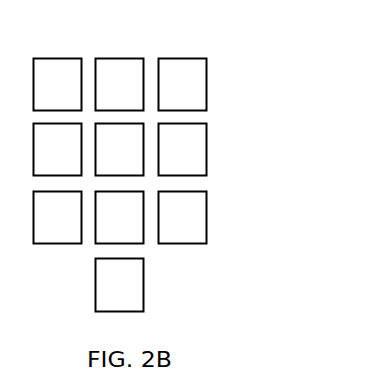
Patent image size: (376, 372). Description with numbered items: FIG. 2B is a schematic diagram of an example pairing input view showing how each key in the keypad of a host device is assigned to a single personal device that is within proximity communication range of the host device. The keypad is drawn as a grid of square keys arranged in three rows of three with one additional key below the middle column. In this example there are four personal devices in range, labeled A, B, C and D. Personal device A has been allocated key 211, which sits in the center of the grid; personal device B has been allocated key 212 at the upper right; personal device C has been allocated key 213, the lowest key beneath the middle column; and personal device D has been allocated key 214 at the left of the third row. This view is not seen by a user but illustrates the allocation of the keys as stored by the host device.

The key 211 is at (135, 143).
The key 212 is at (207, 67).
The key 213 is at (142, 292).
The key 214 is at (79, 219).